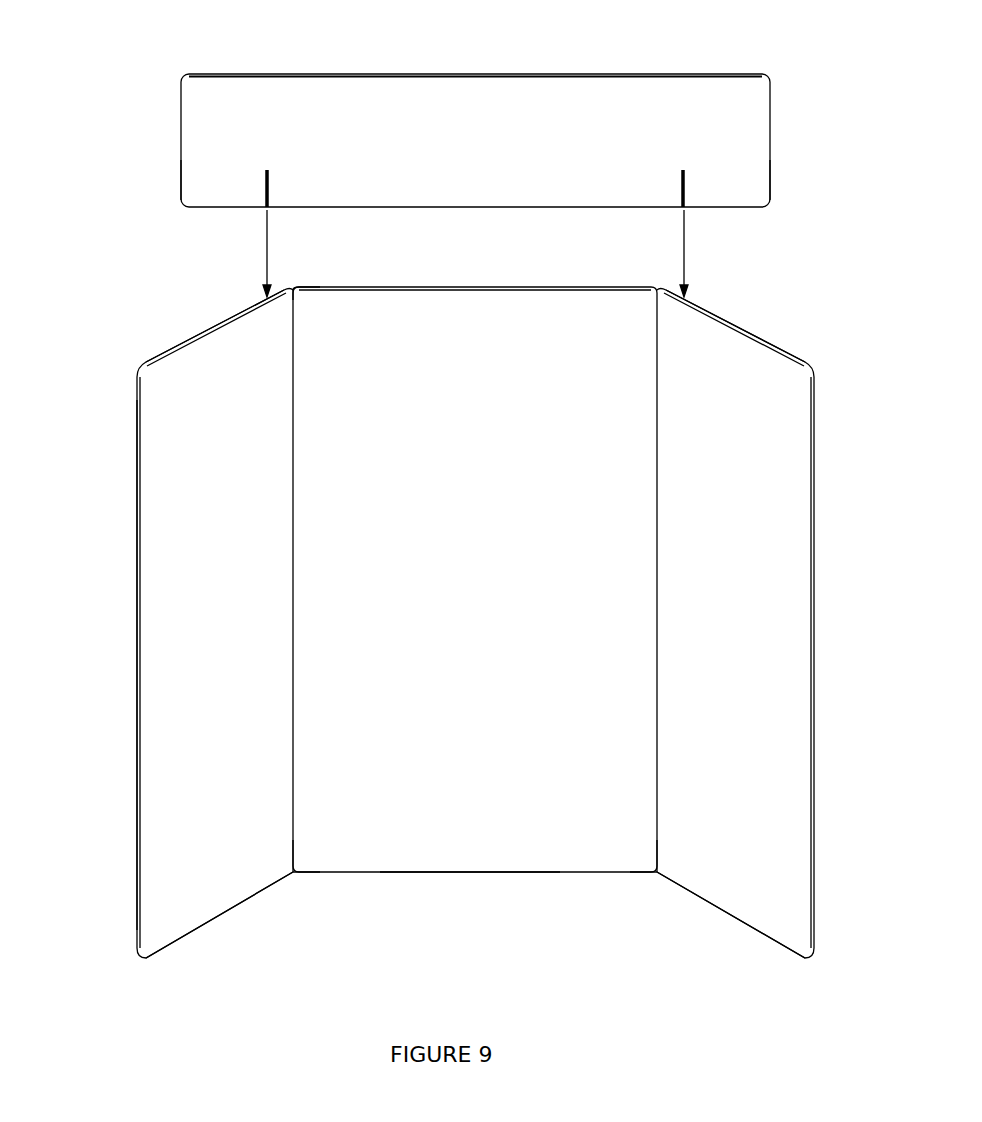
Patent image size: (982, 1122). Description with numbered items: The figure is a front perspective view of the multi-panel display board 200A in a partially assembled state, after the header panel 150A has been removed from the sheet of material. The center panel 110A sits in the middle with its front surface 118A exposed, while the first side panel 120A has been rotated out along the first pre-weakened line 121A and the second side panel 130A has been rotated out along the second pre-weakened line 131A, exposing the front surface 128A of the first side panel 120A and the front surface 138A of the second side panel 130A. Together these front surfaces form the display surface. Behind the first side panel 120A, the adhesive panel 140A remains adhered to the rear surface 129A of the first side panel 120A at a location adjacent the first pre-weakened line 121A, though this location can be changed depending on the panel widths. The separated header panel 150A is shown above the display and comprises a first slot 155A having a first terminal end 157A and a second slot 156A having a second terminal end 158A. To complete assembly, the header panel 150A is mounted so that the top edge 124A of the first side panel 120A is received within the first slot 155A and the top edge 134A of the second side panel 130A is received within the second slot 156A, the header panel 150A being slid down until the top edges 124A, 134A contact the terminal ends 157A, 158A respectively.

The multi-panel display board 200A is at (163, 322).
The header panel 150A is at (476, 116).
The first slot 155A is at (267, 184).
The second slot 156A is at (683, 184).
The first terminal end 157A is at (267, 172).
The second terminal end 158A is at (683, 172).
The center panel 110A is at (467, 575).
The adhesive panel 140A is at (279, 292).
The front surface of the center panel 118A is at (417, 830).
The first pre-weakened line 121A is at (293, 837).
The second pre-weakened line 131A is at (657, 808).
The first side panel 120A is at (166, 596).
The top edge of the first side panel 124A is at (223, 325).
The front surface of the first side panel 128A is at (197, 890).
The rear surface of the first side panel 129A is at (137, 627).
The second side panel 130A is at (752, 630).
The top edge of the second side panel 134A is at (720, 320).
The front surface of the second side panel 138A is at (750, 905).